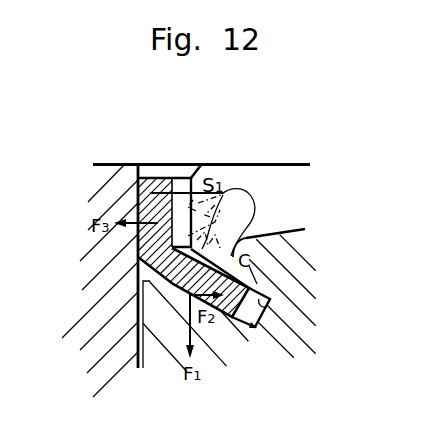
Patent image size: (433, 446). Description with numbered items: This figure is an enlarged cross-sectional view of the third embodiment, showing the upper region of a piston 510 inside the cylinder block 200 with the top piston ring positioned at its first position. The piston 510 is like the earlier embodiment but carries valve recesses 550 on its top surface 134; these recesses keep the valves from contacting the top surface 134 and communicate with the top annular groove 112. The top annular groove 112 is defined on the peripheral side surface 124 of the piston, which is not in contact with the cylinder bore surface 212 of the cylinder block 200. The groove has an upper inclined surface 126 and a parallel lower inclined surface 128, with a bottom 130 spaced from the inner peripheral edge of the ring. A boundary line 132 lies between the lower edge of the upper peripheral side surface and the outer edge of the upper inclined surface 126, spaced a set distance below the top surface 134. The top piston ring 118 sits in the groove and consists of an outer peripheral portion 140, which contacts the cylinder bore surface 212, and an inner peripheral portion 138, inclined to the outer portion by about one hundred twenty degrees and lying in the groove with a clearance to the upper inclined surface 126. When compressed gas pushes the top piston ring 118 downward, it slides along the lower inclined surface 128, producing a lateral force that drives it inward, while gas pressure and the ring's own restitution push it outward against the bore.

The top surface 134 is at (280, 164).
The cylinder block 200 is at (110, 173).
The outer peripheral portion 140 is at (160, 164).
The valve recesses 550 is at (232, 172).
The top piston ring 118 is at (138, 203).
The boundary line 132 is at (138, 259).
The top annular groove 112 is at (138, 288).
The cylinder bore surface 212 is at (138, 323).
The peripheral side surface 124 is at (138, 348).
The inner peripheral portion 138 is at (178, 296).
The lower inclined surface 128 is at (229, 313).
The bottom 130 is at (264, 313).
The upper inclined surface 126 is at (272, 306).
The piston 510 is at (305, 229).